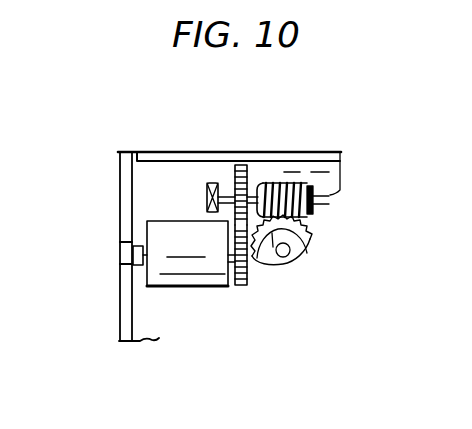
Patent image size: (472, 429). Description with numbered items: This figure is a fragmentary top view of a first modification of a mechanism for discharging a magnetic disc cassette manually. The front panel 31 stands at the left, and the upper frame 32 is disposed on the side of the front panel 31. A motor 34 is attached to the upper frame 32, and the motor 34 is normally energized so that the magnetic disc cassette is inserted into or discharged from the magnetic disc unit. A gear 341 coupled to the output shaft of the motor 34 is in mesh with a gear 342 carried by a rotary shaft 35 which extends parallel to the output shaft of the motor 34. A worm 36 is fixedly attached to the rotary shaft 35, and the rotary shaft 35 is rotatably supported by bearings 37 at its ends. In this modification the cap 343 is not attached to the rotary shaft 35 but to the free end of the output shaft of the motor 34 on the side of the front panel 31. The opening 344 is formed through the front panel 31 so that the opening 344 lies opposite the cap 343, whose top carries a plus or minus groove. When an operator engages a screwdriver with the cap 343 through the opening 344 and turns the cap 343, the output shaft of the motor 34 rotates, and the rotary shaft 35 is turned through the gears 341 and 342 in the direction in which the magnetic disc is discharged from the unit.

The front panel 31 is at (119, 323).
The upper frame 32 is at (147, 338).
The motor 34 is at (175, 228).
The rotary shaft 35 is at (339, 191).
The worm 36 is at (299, 183).
The bearings 37 is at (209, 183).
The gear 341 is at (239, 286).
The gear 342 is at (247, 167).
The cap 343 is at (119, 261).
The opening 344 is at (117, 269).